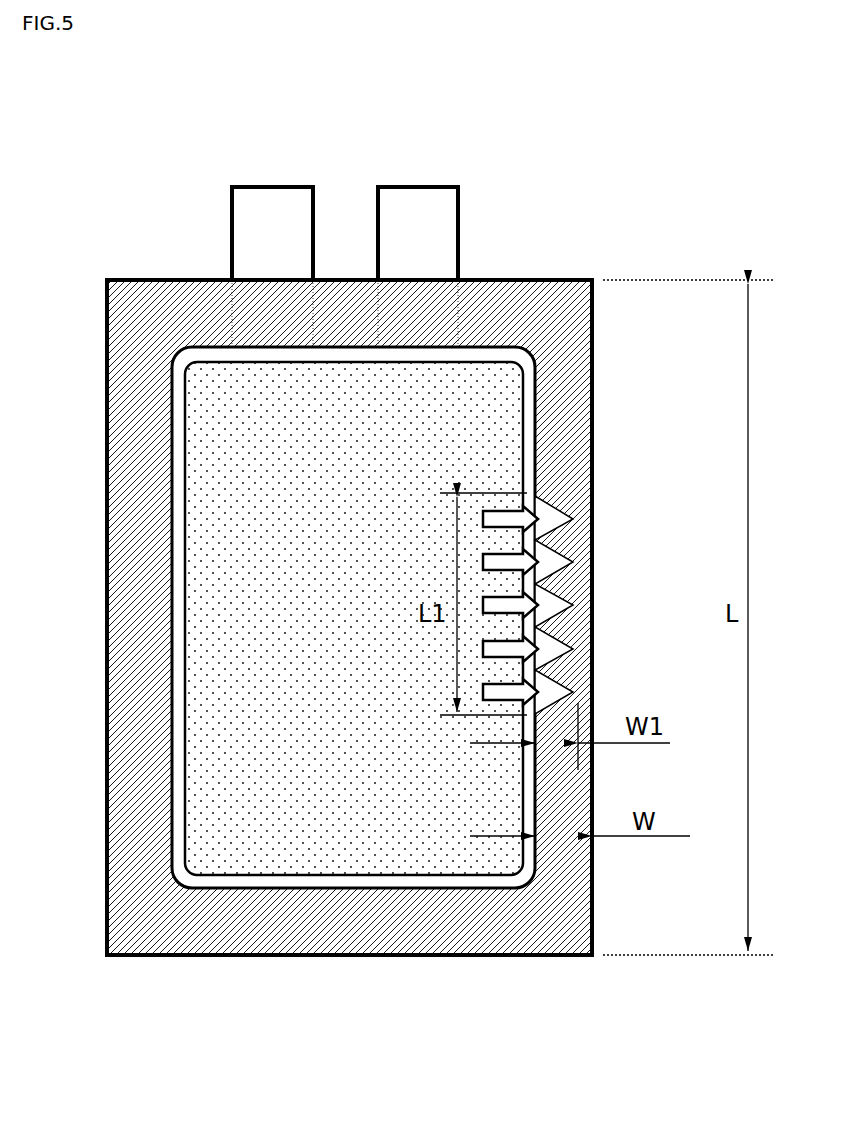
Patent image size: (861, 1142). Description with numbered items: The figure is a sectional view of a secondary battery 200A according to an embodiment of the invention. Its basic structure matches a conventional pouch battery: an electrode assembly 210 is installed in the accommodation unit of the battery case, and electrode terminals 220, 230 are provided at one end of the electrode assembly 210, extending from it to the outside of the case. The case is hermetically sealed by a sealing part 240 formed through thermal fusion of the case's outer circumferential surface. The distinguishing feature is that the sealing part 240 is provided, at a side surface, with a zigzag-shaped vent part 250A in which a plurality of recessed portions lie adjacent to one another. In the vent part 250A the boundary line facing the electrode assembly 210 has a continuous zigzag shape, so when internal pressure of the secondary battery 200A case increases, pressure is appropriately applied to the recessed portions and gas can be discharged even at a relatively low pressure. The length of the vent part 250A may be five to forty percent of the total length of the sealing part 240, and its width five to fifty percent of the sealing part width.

The secondary battery 200A is at (356, 516).
The electrode assembly 210 is at (215, 515).
The electrode terminal 220 is at (275, 198).
The electrode terminal 230 is at (433, 222).
The sealing part 240 is at (512, 298).
The vent part 250A is at (550, 522).